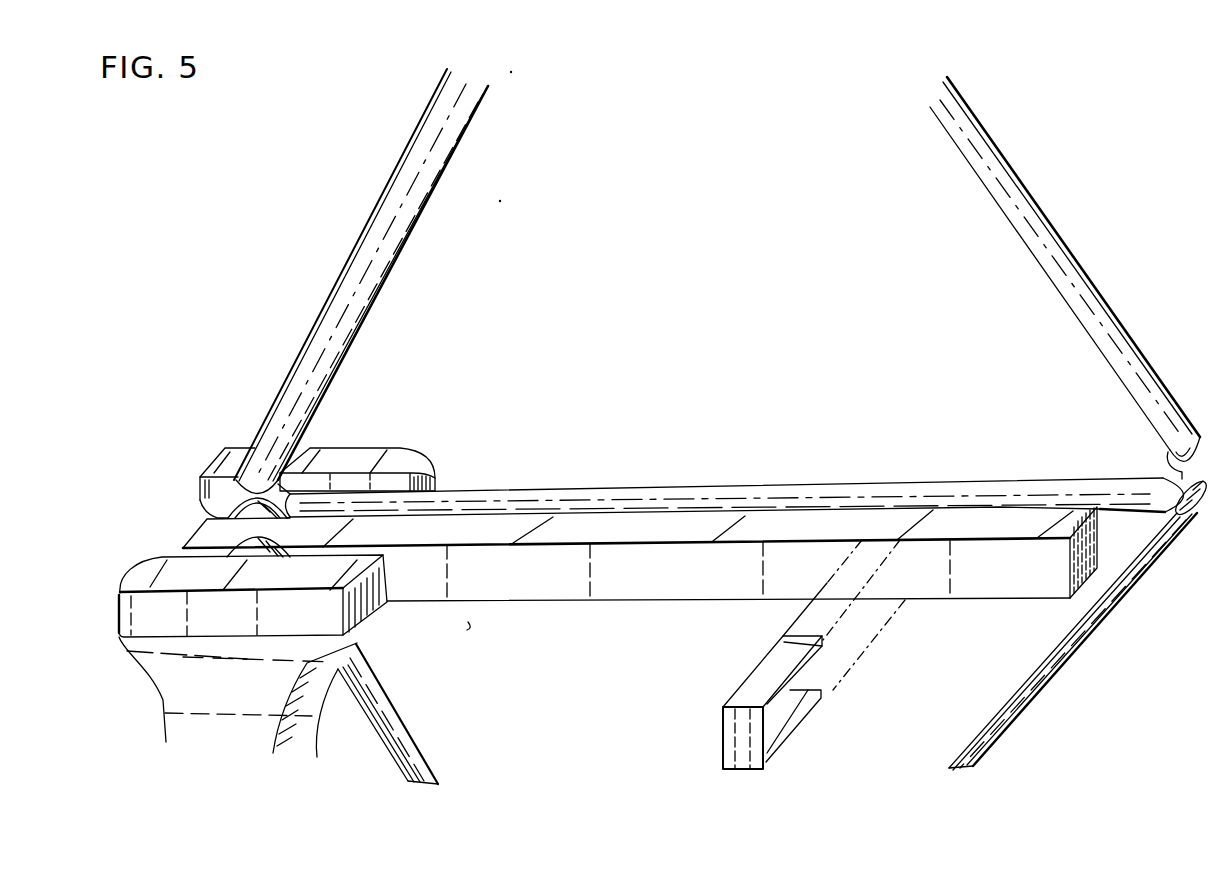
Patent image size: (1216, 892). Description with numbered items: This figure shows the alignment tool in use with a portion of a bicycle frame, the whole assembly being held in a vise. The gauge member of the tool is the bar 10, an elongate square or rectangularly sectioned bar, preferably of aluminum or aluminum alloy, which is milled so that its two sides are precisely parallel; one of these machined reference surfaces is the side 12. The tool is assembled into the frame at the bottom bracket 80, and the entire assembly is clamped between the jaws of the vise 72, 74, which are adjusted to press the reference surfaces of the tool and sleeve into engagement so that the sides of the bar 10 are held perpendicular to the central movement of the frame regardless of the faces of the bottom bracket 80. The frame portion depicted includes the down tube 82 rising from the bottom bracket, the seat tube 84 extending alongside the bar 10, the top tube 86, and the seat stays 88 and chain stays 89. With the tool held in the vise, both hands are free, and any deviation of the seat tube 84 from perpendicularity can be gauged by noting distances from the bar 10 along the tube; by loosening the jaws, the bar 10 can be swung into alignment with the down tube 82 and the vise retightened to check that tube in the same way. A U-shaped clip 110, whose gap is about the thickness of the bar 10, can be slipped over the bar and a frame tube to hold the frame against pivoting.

The bar 10 is at (846, 536).
The side 12 is at (701, 585).
The vise jaw 72 is at (222, 456).
The vise jaw 74 is at (169, 575).
The bottom bracket 80 is at (213, 501).
The down tube 82 is at (413, 188).
The seat tube 84 is at (750, 492).
The top tube 86 is at (972, 158).
The seat stays 88 is at (1053, 660).
The chain stays 89 is at (380, 710).
The U-shaped clip 110 is at (763, 676).